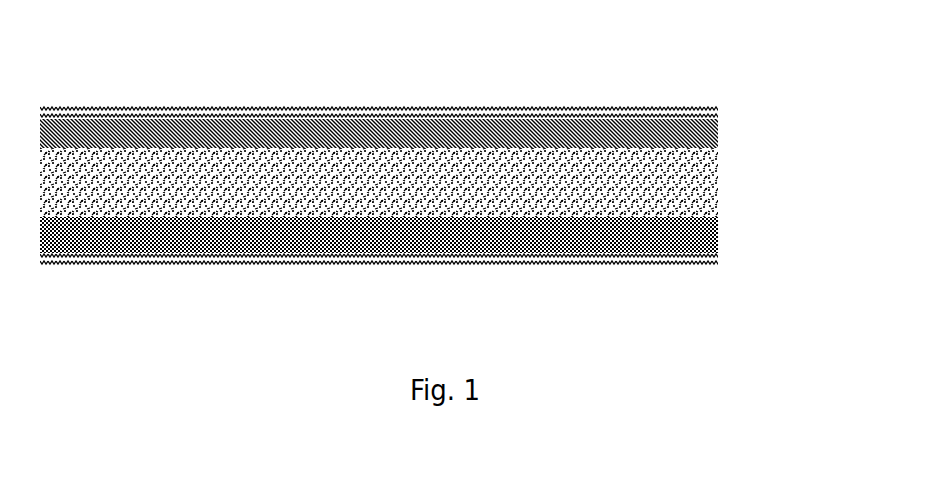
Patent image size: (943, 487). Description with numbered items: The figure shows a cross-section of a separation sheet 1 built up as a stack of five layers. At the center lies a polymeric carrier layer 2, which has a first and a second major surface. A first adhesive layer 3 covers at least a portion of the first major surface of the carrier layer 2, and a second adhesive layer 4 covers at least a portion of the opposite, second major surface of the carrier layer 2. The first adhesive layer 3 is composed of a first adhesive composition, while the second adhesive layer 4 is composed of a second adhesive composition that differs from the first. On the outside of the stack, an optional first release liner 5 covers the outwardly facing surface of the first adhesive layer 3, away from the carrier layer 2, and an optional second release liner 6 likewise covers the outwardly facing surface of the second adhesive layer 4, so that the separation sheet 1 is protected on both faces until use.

The separation sheet 1 is at (530, 82).
The polymeric carrier layer 2 is at (718, 191).
The first adhesive layer 3 is at (718, 138).
The second adhesive layer 4 is at (718, 238).
The first release liner 5 is at (717, 110).
The second release liner 6 is at (717, 262).